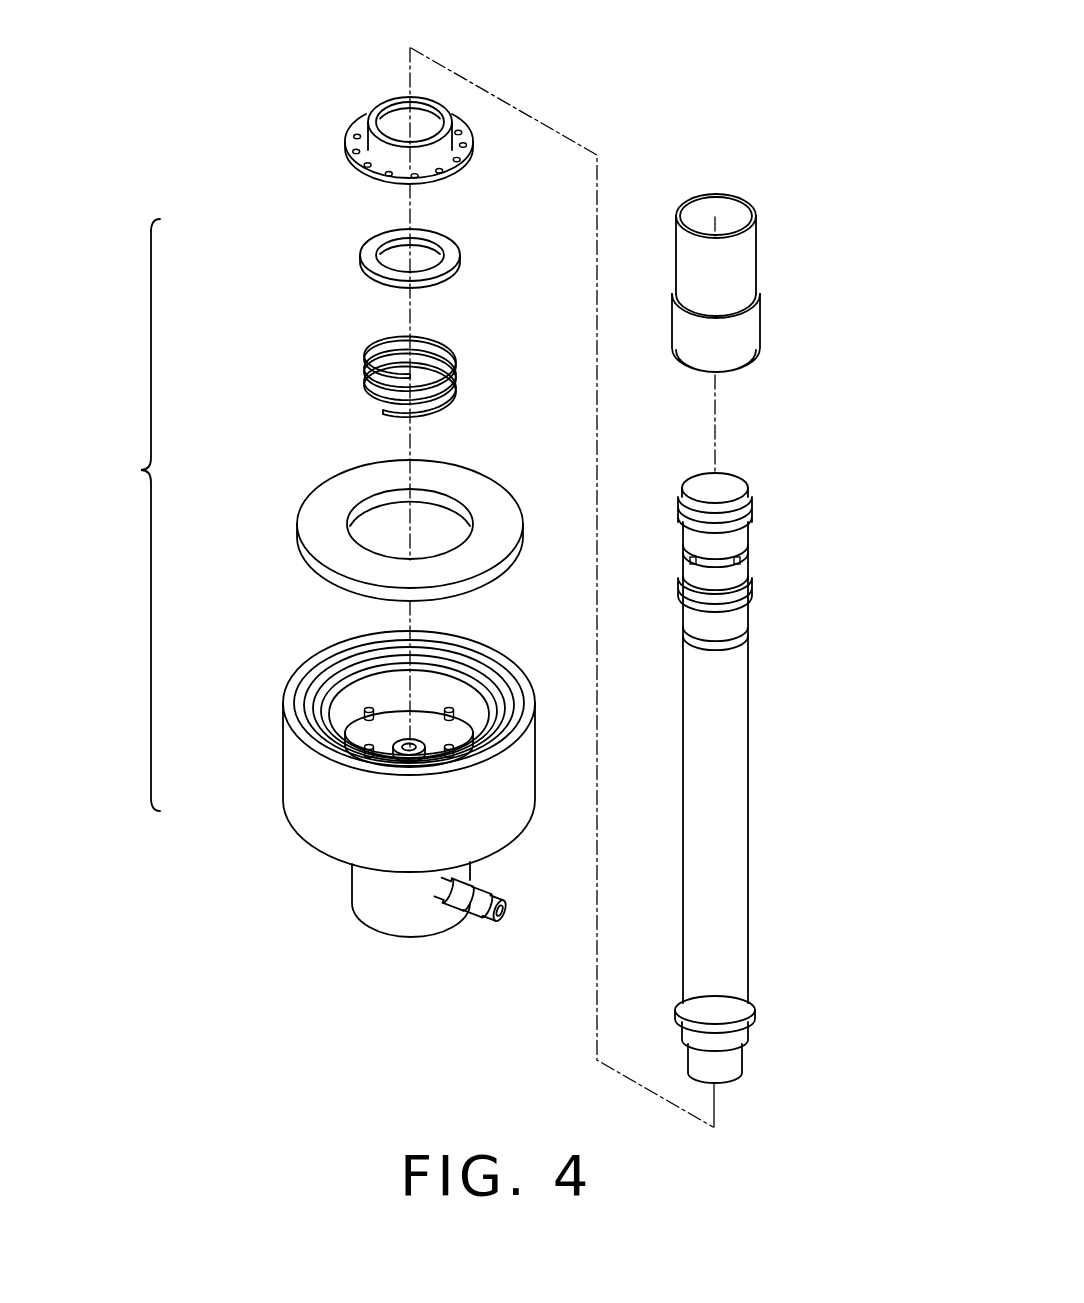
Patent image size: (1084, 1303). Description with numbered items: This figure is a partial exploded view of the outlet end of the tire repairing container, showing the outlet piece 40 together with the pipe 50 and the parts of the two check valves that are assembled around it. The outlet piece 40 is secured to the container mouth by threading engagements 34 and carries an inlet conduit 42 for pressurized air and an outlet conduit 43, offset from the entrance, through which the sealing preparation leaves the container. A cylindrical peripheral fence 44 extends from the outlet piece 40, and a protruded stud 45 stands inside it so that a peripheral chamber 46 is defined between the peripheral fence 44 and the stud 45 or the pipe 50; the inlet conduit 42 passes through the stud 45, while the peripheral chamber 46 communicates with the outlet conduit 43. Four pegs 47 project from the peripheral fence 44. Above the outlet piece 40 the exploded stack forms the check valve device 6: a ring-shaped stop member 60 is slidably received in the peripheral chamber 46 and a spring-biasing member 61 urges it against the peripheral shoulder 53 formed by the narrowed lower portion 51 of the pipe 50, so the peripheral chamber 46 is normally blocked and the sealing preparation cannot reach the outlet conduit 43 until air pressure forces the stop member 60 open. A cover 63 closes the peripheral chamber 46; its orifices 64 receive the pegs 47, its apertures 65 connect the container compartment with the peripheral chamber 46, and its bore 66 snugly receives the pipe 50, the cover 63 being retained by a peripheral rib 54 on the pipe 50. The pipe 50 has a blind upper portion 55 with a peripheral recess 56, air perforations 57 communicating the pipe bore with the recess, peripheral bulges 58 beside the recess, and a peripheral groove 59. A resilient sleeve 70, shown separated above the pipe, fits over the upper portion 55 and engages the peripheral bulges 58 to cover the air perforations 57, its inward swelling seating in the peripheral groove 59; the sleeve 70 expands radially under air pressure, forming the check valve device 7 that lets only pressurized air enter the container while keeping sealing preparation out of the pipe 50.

The check valve device 6 is at (208, 166).
The check valve device 7 is at (794, 146).
The threading engagements 34 is at (335, 712).
The outlet piece 40 is at (293, 798).
The inlet conduit 42 is at (405, 745).
The outlet conduit 43 is at (467, 905).
The peripheral fence 44 is at (462, 728).
The protruded stud 45 is at (412, 745).
The peripheral chamber 46 is at (377, 737).
The pegs 47 is at (452, 706).
The pipe 50 is at (740, 822).
The lower portion 51 is at (720, 1067).
The peripheral shoulder 53 is at (747, 1037).
The peripheral rib 54 is at (750, 1005).
The upper portion 55 is at (735, 488).
The peripheral recess 56 is at (683, 590).
The air perforations 57 is at (683, 598).
The peripheral bulges 58 is at (748, 593).
The peripheral groove 59 is at (733, 642).
The stop member 60 is at (356, 252).
The spring-biasing member 61 is at (375, 372).
The cover 63 is at (348, 127).
The orifices 64 is at (367, 167).
The apertures 65 is at (443, 163).
The bore 66 is at (397, 123).
The sleeve 70 is at (745, 256).